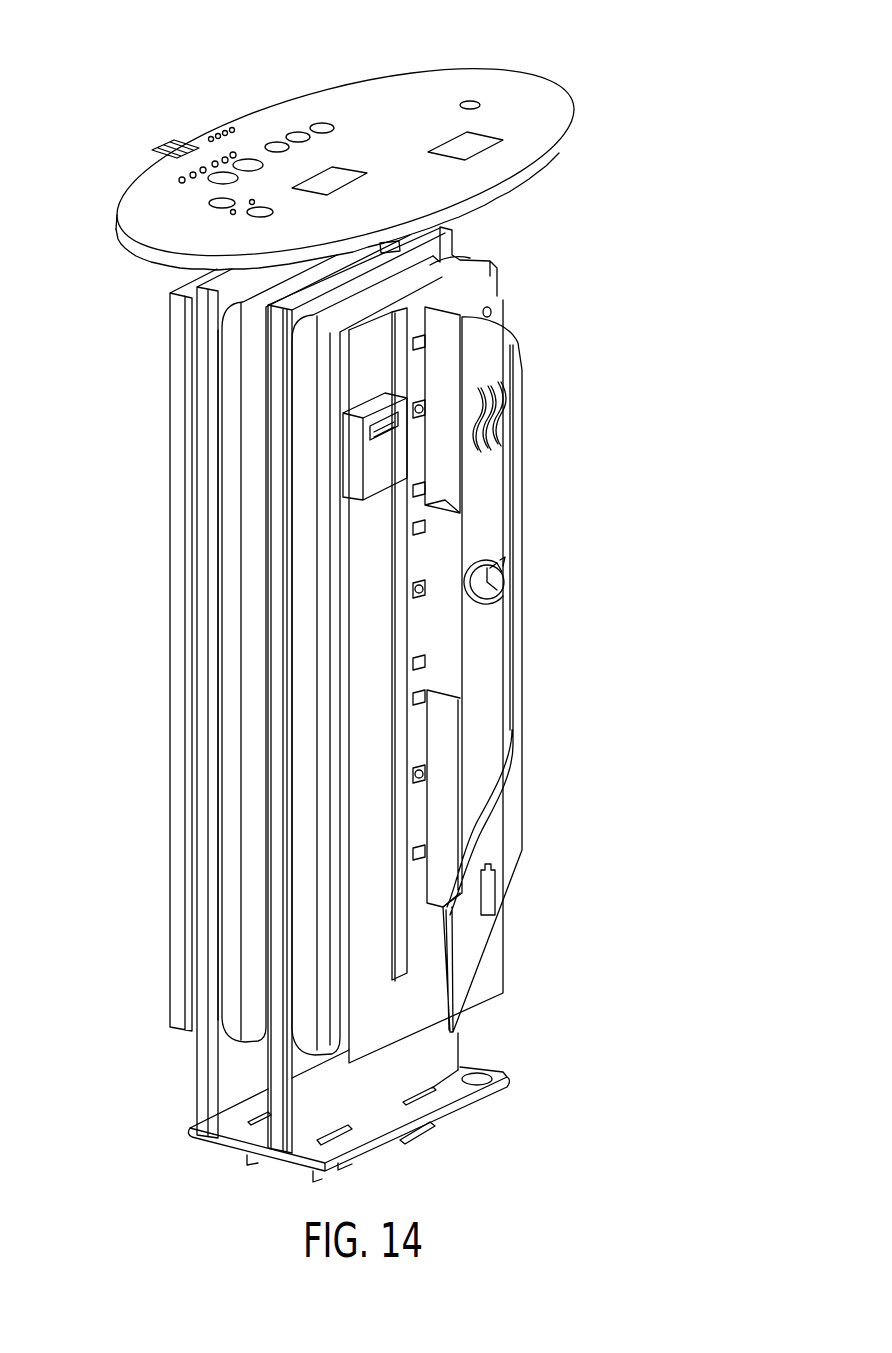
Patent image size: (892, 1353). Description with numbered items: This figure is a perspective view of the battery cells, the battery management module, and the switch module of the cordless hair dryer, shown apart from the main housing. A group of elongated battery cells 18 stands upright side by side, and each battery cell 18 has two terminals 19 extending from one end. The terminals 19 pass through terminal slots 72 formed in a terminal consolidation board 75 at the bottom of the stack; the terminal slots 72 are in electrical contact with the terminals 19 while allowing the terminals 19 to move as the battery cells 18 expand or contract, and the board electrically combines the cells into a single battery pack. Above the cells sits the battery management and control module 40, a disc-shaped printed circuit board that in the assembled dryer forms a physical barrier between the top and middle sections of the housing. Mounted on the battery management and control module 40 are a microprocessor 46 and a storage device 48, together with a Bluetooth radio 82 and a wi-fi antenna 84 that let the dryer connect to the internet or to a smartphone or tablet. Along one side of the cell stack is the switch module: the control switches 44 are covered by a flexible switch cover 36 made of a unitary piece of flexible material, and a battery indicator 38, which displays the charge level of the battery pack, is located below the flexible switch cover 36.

The battery cells 18 is at (232, 422).
The terminals 19 is at (323, 1174).
The flexible switch cover 36 is at (496, 502).
The battery indicator 38 is at (487, 893).
The battery management and control module 40 is at (553, 118).
The control switches 44 is at (484, 288).
The microprocessor 46 is at (352, 170).
The storage device 48 is at (487, 135).
The terminal slots 72 is at (333, 1130).
The terminal consolidation board 75 is at (420, 1103).
The Bluetooth radio 82 is at (322, 126).
The wi-fi antenna 84 is at (299, 136).